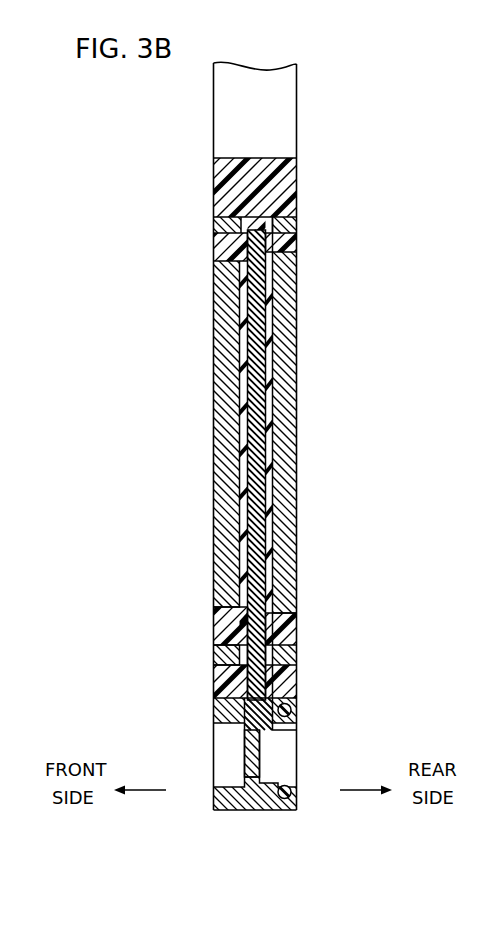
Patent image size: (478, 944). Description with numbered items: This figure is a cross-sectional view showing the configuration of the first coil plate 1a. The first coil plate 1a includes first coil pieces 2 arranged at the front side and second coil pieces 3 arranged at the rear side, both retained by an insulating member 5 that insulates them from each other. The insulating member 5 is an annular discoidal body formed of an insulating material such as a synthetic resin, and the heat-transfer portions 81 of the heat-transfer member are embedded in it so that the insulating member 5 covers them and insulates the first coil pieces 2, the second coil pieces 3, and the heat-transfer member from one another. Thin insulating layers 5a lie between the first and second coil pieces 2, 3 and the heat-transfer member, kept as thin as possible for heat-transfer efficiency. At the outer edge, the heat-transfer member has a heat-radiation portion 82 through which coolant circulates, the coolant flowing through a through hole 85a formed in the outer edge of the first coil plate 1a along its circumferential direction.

The first coil plate 1a is at (305, 122).
The first coil pieces 2 is at (226, 533).
The second coil pieces 3 is at (282, 514).
The insulating member 5 is at (230, 635).
The insulating layers 5a is at (270, 455).
The heat-transfer portions 81 is at (252, 445).
The heat-radiation portion 82 is at (222, 796).
The through hole 85a is at (252, 777).